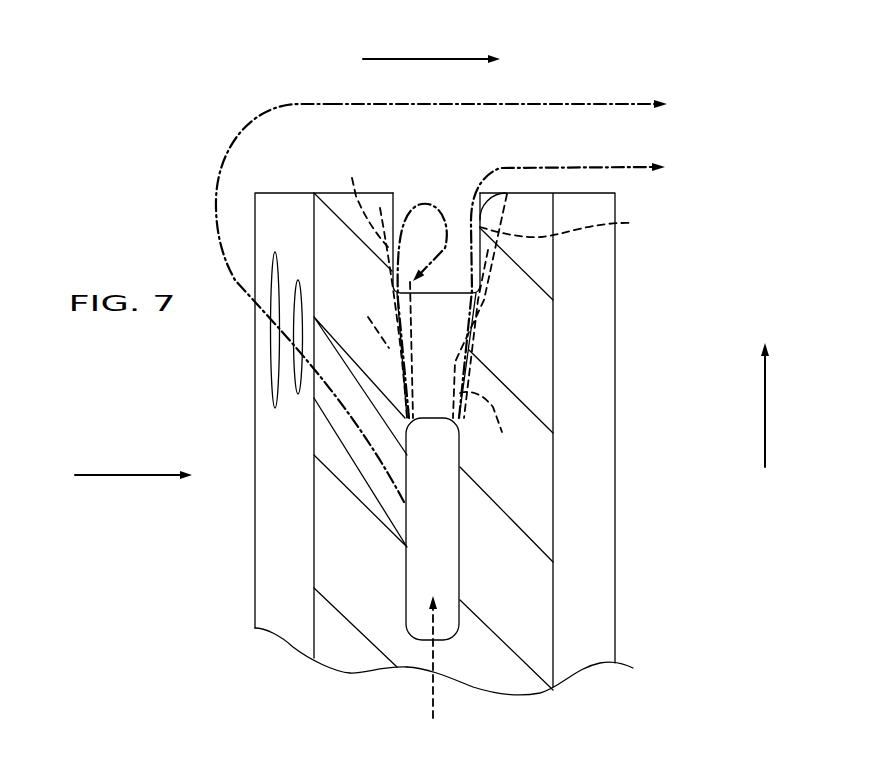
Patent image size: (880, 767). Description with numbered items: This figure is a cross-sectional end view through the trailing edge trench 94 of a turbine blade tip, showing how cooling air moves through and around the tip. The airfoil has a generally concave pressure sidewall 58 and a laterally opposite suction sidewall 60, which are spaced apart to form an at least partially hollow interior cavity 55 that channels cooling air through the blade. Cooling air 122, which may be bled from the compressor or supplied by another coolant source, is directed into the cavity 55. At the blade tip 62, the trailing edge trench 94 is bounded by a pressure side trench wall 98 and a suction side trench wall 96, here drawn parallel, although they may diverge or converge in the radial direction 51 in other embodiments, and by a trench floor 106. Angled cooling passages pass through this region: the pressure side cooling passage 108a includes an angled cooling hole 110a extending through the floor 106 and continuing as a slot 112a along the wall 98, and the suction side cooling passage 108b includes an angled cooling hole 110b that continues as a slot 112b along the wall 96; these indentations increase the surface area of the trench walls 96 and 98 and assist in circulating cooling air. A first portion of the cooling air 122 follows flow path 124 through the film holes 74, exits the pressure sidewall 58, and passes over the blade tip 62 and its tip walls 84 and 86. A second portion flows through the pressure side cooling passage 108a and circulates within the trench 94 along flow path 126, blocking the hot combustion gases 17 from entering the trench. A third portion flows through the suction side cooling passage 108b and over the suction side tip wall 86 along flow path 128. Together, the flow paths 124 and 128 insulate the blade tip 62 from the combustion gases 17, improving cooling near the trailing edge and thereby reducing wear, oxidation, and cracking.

The combustion gases 17 is at (431, 56).
The radial direction 51 is at (765, 395).
The interior cavity 55 is at (447, 528).
The pressure sidewall 58 is at (284, 460).
The suction sidewall 60 is at (587, 460).
The blade tip 62 is at (572, 82).
The film holes 74 is at (353, 462).
The pressure side tip wall 84 is at (332, 196).
The suction side tip wall 86 is at (533, 191).
The trailing edge trench 94 is at (423, 181).
The suction side trench wall 96 is at (482, 262).
The pressure side trench wall 98 is at (390, 240).
The trench floor 106 is at (443, 306).
The pressure side cooling passage 108a is at (374, 272).
The suction side cooling passage 108b is at (500, 308).
The first angled cooling hole 110a is at (355, 324).
The second angled cooling hole 110b is at (491, 428).
The first slot 112a is at (360, 200).
The second slot 112b is at (576, 224).
The cooling air 122 is at (435, 698).
The first flow path 124 is at (418, 102).
The circulation flow path 126 is at (441, 200).
The suction side flow path 128 is at (625, 168).